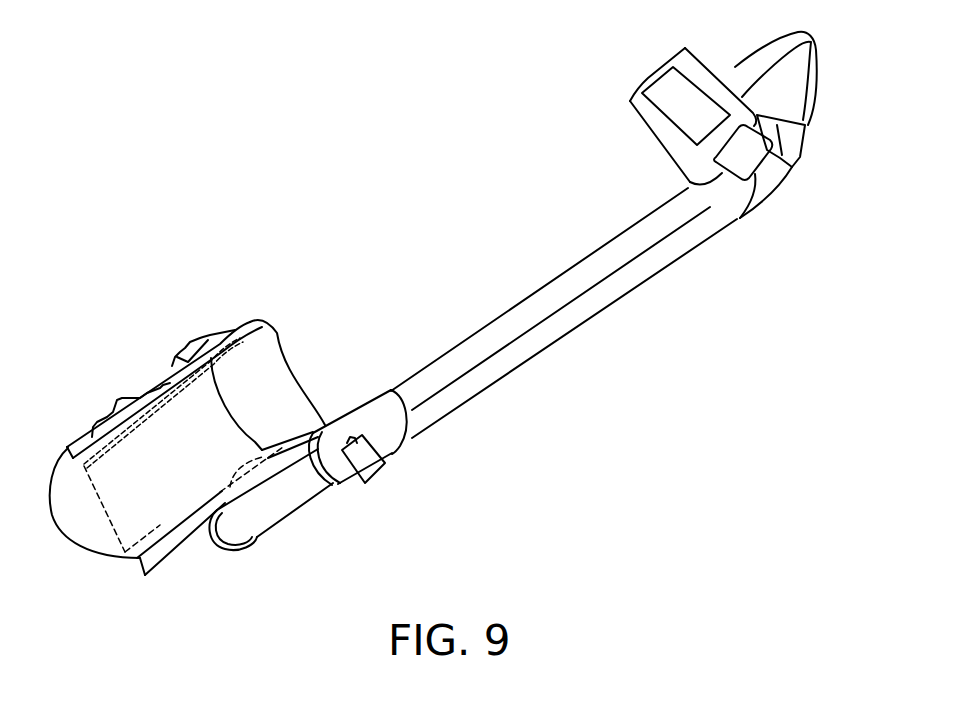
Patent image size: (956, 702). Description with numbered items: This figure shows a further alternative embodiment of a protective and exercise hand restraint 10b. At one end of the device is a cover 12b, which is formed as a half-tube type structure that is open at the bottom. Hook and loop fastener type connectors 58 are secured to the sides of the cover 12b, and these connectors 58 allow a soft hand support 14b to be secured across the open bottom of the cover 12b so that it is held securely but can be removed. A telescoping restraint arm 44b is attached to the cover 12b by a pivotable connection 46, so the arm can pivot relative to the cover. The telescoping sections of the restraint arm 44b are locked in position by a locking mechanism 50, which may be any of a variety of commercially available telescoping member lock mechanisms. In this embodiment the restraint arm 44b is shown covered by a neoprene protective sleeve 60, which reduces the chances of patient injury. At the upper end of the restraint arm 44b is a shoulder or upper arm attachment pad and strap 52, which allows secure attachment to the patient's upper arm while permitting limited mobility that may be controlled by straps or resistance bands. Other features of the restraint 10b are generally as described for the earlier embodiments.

The restraint 10b is at (416, 220).
The cover 12b is at (103, 557).
The soft hand support 14b is at (273, 360).
The telescoping restraint arm 44b is at (536, 338).
The pivotable connection 46 is at (240, 533).
The locking mechanism 50 is at (397, 453).
The shoulder or upper arm attachment pad and strap 52 is at (784, 173).
The hook and loop fastener type connectors 58 is at (203, 336).
The neoprene protective sleeve 60 is at (655, 265).